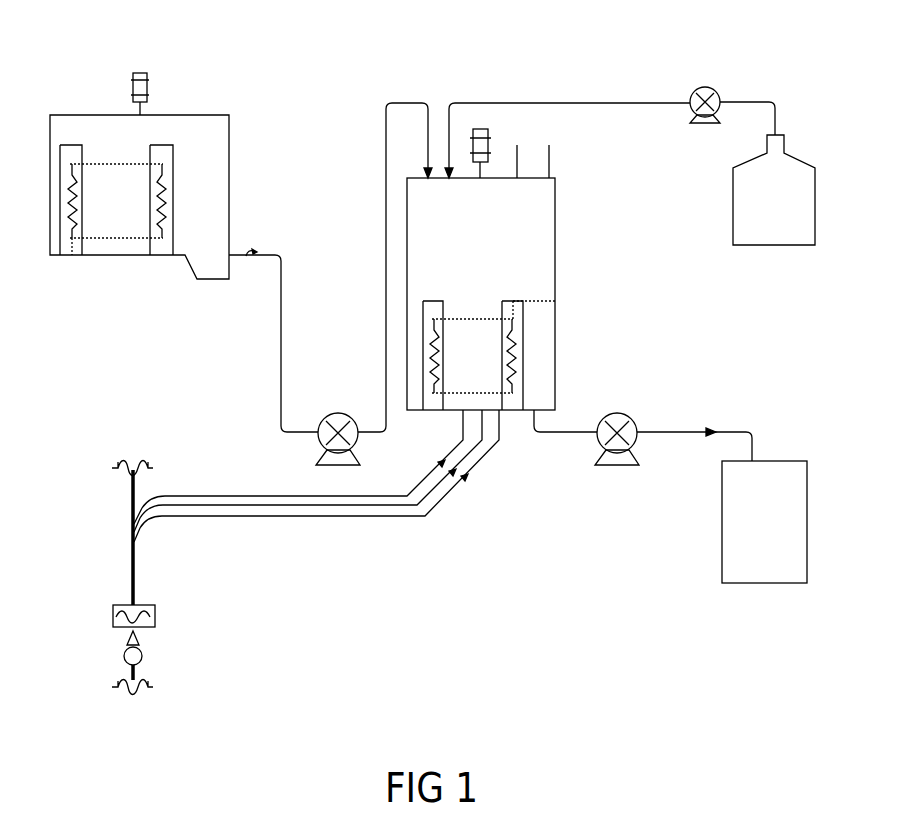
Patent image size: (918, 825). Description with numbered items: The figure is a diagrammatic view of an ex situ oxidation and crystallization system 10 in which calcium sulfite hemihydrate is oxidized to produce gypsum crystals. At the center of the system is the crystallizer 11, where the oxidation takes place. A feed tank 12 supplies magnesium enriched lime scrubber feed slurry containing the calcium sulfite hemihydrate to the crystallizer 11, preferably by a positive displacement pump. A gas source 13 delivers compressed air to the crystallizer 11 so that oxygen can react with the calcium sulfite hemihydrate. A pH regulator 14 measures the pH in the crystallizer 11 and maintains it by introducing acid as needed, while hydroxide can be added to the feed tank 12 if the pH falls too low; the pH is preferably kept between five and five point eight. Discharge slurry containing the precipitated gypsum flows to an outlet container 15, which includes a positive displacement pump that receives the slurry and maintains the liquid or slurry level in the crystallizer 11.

The ex situ oxidation and crystallization system 10 is at (122, 36).
The crystallizer 11 is at (481, 269).
The feed tank 12 is at (126, 150).
The gas source 13 is at (134, 570).
The pH regulator 14 is at (784, 214).
The outlet container 15 is at (764, 522).